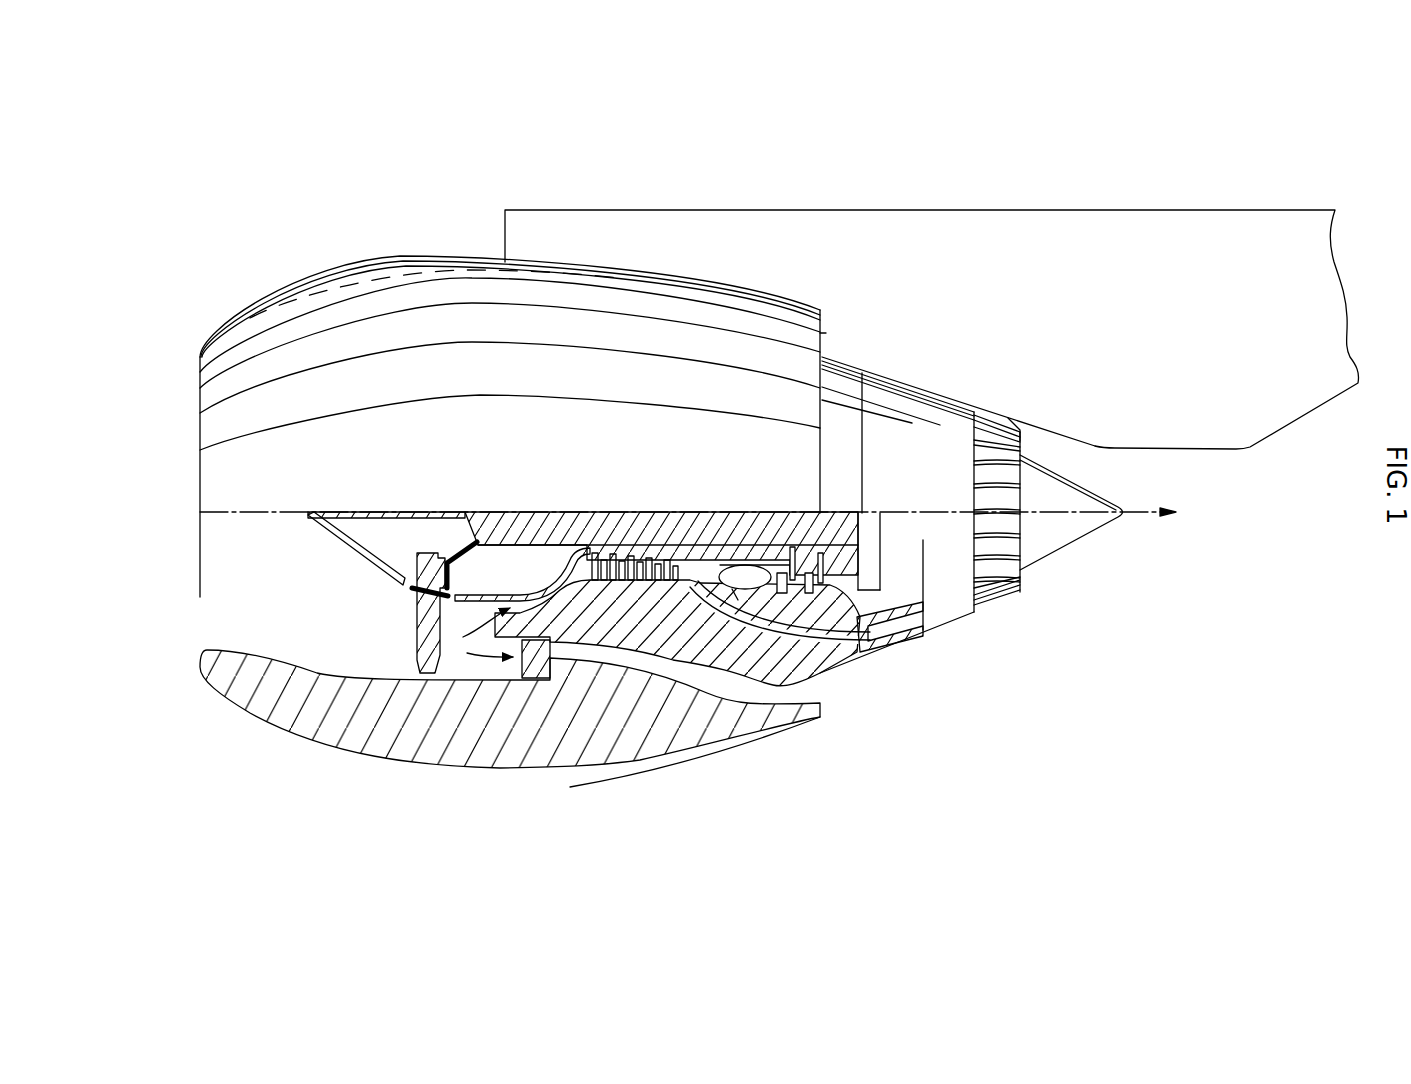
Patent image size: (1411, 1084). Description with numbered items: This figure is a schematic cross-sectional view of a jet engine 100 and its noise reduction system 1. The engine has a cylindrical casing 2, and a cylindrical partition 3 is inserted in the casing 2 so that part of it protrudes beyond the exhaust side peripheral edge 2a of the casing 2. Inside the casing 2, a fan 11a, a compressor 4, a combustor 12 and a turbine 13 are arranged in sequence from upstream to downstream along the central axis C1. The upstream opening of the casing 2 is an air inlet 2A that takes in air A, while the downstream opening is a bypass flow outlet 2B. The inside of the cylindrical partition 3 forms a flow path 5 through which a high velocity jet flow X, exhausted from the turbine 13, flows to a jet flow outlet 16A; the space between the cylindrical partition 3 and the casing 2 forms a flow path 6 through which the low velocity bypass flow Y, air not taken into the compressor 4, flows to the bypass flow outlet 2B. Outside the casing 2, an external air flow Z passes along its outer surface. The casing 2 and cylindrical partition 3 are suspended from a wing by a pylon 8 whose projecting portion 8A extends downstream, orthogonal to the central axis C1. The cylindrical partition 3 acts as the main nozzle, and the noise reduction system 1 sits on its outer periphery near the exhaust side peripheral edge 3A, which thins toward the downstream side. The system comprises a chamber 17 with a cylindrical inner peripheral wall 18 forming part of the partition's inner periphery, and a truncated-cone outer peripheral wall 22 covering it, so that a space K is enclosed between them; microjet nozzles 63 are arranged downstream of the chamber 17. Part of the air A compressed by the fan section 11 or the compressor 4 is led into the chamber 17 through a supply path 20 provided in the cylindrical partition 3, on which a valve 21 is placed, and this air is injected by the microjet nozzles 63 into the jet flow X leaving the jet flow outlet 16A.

The jet engine 100 is at (245, 280).
The casing 2 is at (356, 290).
The air inlet 2A is at (200, 597).
The bypass flow outlet 2B is at (820, 707).
The exhaust side peripheral edge 2a is at (826, 333).
The noise reduction system 1 is at (1028, 305).
The cylindrical partition 3 is at (1012, 413).
The exhaust side peripheral edge 3A is at (1022, 548).
The compressor 4 is at (612, 545).
The flow path 5 is at (566, 550).
The flow path 6 is at (812, 683).
The pylon 8 is at (703, 230).
The projecting portion 8A is at (1217, 300).
The fan section 11 is at (407, 550).
The fan 11a is at (440, 660).
The combustor 12 is at (747, 577).
The turbine 13 is at (808, 570).
The jet flow outlet 16A is at (1022, 525).
The chamber 17 is at (963, 400).
The inner peripheral wall 18 is at (916, 592).
The supply path 20 is at (780, 640).
The valve 21 is at (708, 545).
The outer peripheral wall 22 is at (925, 622).
The microjet nozzles 63 is at (1012, 428).
The air A is at (447, 646).
The jet flow X is at (830, 598).
The bypass flow Y is at (810, 683).
The external air flow Z is at (780, 753).
The space K is at (902, 626).
The central axis C1 is at (706, 512).